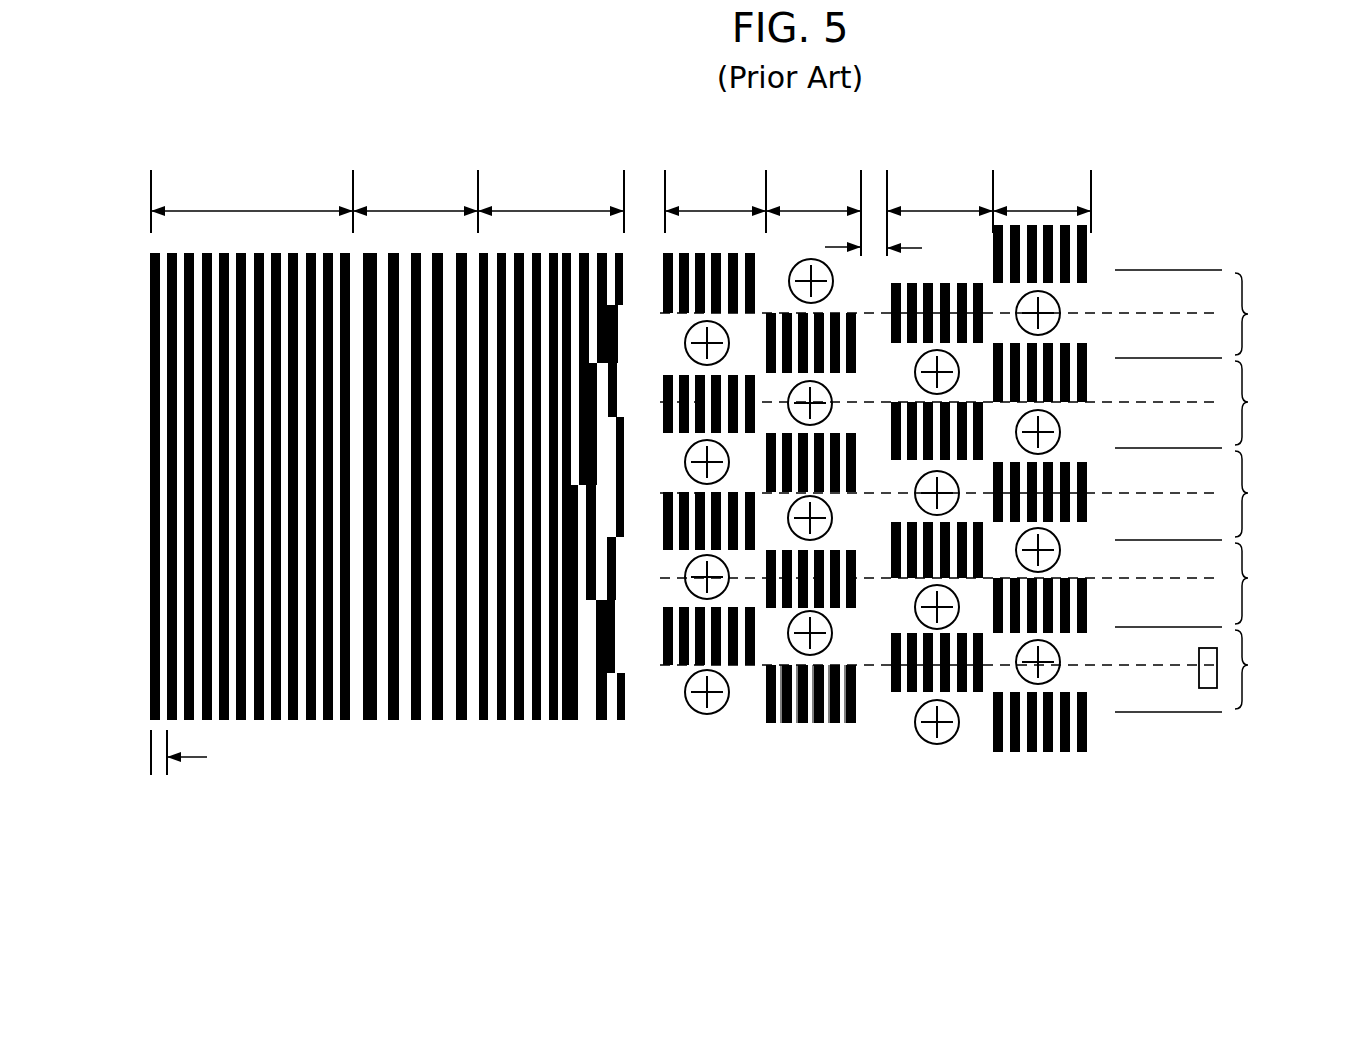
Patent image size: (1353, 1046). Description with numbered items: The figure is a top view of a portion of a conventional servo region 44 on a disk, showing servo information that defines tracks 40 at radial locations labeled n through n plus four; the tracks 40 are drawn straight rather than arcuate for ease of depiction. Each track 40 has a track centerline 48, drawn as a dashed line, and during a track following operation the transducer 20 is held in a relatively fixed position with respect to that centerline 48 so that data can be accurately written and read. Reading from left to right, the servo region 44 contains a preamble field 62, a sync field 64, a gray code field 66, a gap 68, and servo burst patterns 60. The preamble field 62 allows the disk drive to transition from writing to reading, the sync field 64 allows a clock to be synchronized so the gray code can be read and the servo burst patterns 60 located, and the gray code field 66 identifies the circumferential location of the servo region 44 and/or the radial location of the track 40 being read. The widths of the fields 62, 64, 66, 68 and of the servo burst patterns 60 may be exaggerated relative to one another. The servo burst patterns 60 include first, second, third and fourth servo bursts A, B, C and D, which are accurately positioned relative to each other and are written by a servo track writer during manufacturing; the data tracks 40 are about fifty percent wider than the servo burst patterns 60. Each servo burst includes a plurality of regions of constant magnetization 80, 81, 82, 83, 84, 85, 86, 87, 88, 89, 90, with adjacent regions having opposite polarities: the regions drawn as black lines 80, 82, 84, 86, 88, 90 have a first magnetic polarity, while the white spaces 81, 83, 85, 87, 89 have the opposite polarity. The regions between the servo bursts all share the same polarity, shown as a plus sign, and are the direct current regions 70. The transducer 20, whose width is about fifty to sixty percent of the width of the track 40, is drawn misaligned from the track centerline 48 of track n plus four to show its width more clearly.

The transducer 20 is at (1210, 670).
The track 40 is at (1234, 491).
The servo region 44 is at (1104, 114).
The track centerline 48 is at (1137, 316).
The servo burst pattern 60 is at (665, 858).
The preamble field 62 is at (270, 471).
The sync field 64 is at (415, 443).
The gray code field 66 is at (551, 443).
The gap 68 is at (644, 200).
The direct current region 70 is at (1066, 304).
The region of constant magnetization 80 is at (773, 725).
The region of constant magnetization 81 is at (781, 725).
The region of constant magnetization 82 is at (789, 725).
The region of constant magnetization 83 is at (797, 725).
The region of constant magnetization 84 is at (805, 725).
The region of constant magnetization 85 is at (813, 725).
The region of constant magnetization 86 is at (821, 725).
The region of constant magnetization 87 is at (829, 725).
The region of constant magnetization 88 is at (837, 725).
The region of constant magnetization 89 is at (845, 725).
The region of constant magnetization 90 is at (853, 725).